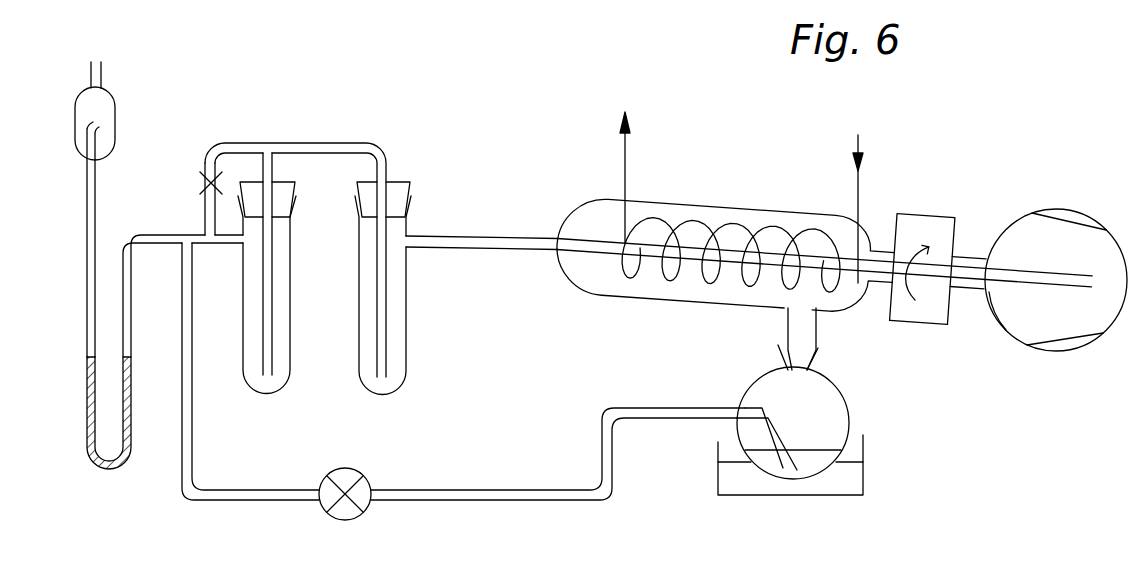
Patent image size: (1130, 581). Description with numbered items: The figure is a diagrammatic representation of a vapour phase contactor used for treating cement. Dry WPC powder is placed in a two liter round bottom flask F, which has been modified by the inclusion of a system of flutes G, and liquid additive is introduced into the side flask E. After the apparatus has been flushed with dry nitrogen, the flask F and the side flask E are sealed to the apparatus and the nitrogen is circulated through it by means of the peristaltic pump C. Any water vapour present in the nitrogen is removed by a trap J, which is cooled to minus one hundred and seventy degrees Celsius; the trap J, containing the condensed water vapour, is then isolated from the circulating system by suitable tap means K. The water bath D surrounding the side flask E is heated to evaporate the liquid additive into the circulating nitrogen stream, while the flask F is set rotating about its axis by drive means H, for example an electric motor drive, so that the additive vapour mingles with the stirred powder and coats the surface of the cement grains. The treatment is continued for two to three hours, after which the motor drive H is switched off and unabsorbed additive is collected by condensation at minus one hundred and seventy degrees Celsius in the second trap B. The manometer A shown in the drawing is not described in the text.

The manometer A is at (140, 281).
The second trap B is at (383, 305).
The peristaltic pump C is at (339, 520).
The water bath D is at (812, 497).
The side flask E is at (843, 378).
The round bottom flask F is at (1003, 333).
The system of flutes G is at (1073, 214).
The drive means H is at (923, 261).
The trap J is at (267, 289).
The tap means K is at (201, 183).